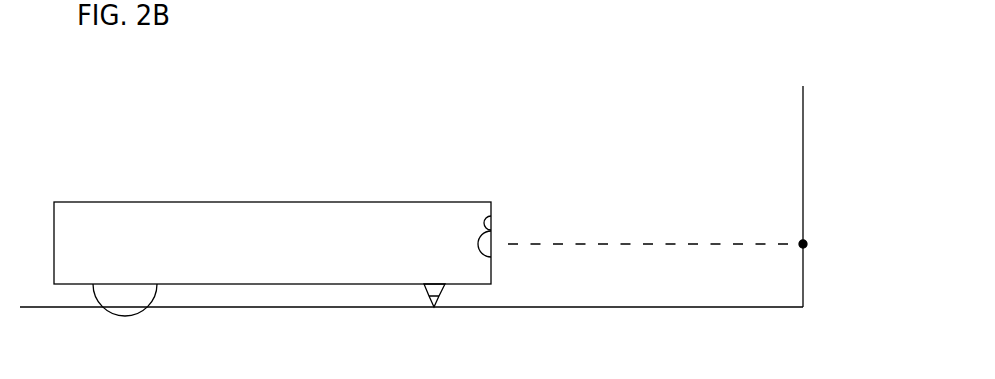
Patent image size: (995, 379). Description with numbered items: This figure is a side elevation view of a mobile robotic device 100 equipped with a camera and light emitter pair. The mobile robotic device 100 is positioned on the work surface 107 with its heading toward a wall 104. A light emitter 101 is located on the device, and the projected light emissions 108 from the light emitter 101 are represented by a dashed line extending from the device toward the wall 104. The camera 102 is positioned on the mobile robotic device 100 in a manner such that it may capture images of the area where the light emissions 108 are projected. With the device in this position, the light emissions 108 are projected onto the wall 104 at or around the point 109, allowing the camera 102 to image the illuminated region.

The mobile robotic device 100 is at (260, 202).
The light emitter 101 is at (478, 244).
The camera 102 is at (490, 223).
The wall 104 is at (826, 196).
The work surface 107 is at (284, 307).
The light emissions 108 is at (654, 231).
The point 109 is at (807, 244).